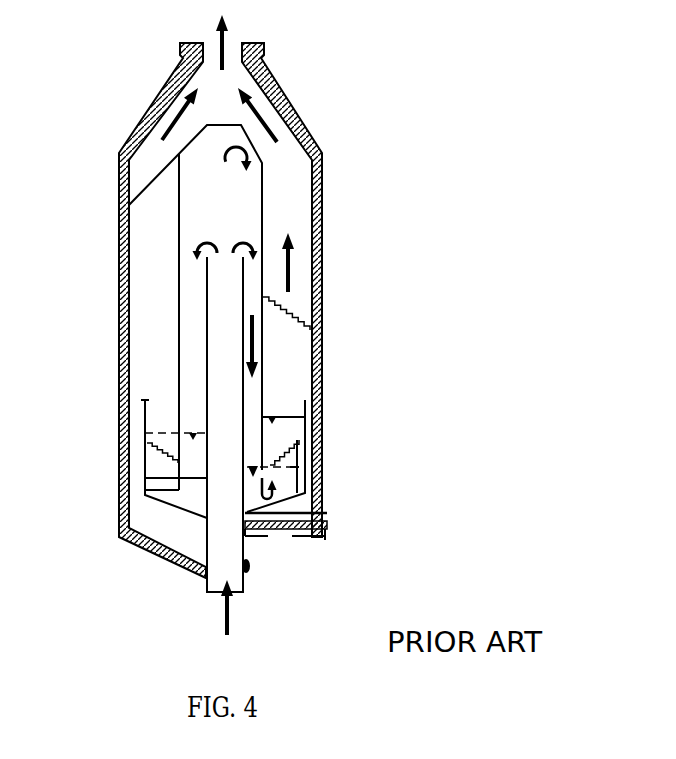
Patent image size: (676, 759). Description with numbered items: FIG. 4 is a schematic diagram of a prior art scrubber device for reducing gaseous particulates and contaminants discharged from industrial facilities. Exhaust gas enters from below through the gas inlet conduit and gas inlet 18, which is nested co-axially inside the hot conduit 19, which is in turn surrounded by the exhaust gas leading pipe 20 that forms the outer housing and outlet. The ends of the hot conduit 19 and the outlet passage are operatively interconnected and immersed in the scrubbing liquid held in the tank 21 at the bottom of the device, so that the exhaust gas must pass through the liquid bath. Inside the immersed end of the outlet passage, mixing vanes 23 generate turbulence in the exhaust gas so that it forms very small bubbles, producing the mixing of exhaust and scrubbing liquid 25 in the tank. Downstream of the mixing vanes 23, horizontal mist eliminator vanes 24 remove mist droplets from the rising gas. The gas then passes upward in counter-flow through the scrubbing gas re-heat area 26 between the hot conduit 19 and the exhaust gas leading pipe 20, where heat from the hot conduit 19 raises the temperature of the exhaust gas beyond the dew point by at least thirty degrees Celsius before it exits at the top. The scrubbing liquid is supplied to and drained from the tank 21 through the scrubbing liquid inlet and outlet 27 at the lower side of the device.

The gas inlet conduit 18 is at (206, 585).
The hot conduit 19 is at (179, 345).
The exhaust gas leading pipe 20 is at (119, 253).
The tank containing scrubbing liquid 21 is at (145, 401).
The mixing vanes 23 is at (147, 443).
The mist eliminator vanes 24 is at (292, 313).
The mixing exhaust and scrubbing liquid 25 is at (288, 431).
The scrubbing gas re-heat area 26 is at (283, 220).
The scrubbing liquid inlet and outlet 27 is at (327, 523).